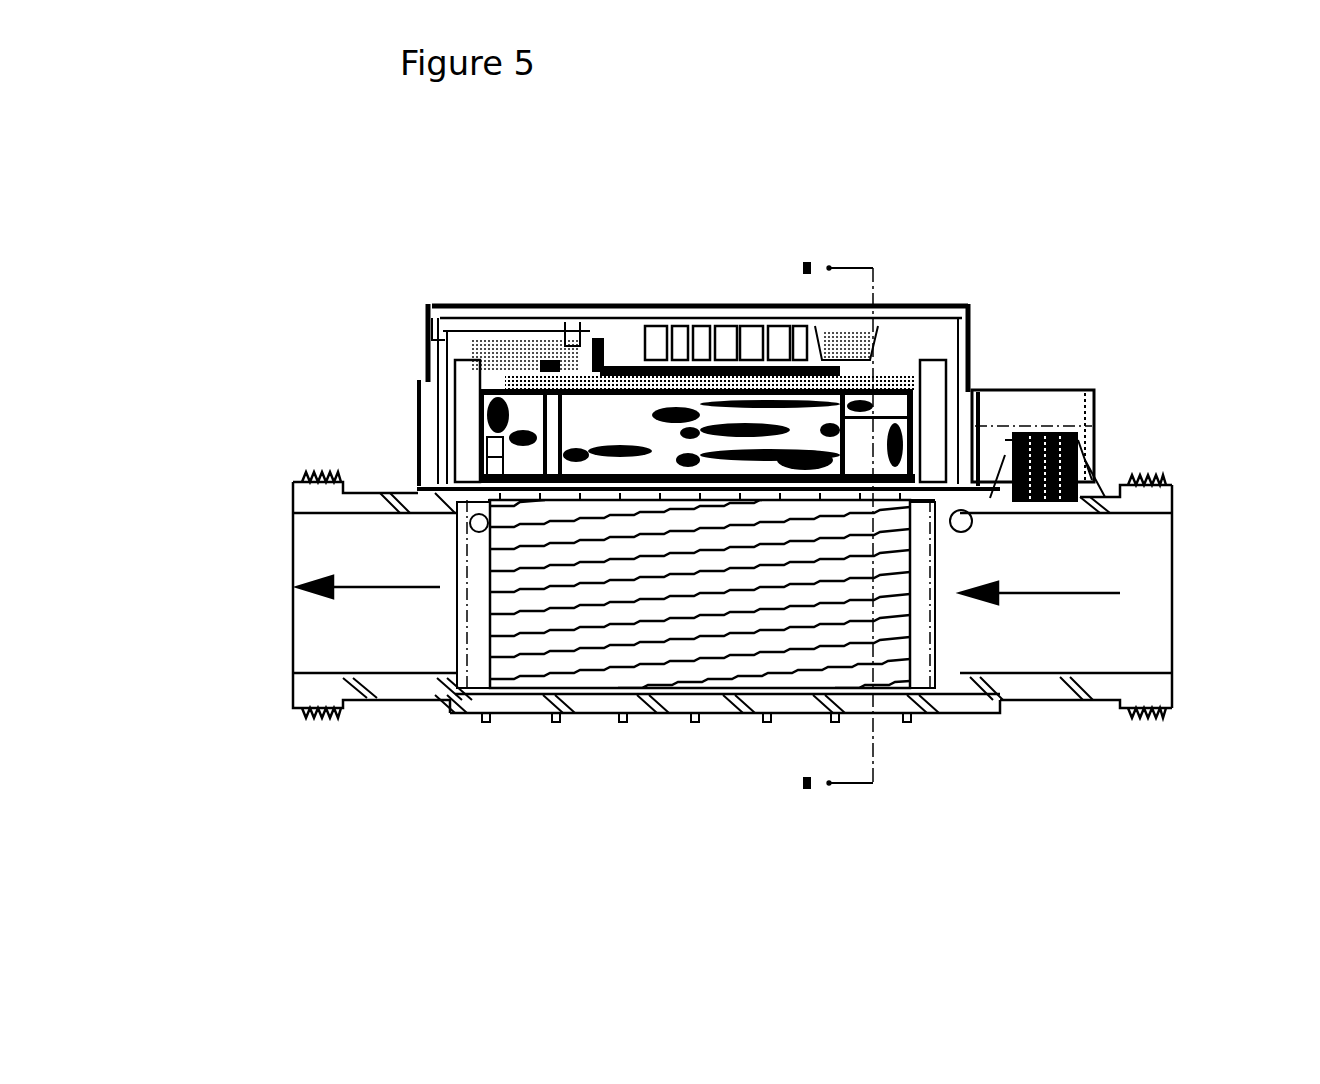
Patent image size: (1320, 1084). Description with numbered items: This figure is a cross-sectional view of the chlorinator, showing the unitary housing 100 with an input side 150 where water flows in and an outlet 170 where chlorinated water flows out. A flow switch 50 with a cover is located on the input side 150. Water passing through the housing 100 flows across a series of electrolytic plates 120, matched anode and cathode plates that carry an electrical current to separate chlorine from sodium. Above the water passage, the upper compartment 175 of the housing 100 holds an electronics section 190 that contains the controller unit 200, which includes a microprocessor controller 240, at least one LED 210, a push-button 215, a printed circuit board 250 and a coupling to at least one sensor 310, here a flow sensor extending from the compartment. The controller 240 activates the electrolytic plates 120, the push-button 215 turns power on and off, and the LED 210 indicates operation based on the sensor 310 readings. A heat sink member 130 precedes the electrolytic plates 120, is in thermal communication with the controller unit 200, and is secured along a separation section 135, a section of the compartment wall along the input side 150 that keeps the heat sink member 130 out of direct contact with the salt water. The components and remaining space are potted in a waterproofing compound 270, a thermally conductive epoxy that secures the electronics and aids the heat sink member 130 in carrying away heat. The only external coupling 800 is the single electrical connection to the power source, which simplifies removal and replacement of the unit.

The flow switch 50 is at (1077, 460).
The housing 100 is at (553, 708).
The electrolytic plates 120 is at (660, 600).
The heat sink member 130 is at (917, 407).
The separation section 135 is at (827, 490).
The input side 150 is at (1158, 608).
The outlet 170 is at (333, 626).
The upper compartment 175 is at (413, 470).
The electronics section 190 is at (897, 353).
The controller unit 200 is at (710, 300).
The LED 210 is at (660, 322).
The push-button 215 is at (593, 325).
The controller 240 is at (800, 345).
The printed circuit board 250 is at (575, 352).
The waterproofing compound 270 is at (427, 320).
The sensor 310 is at (476, 520).
The external coupling 800 is at (977, 350).